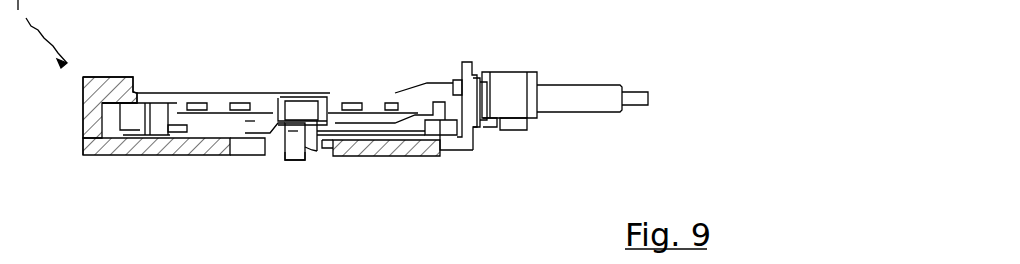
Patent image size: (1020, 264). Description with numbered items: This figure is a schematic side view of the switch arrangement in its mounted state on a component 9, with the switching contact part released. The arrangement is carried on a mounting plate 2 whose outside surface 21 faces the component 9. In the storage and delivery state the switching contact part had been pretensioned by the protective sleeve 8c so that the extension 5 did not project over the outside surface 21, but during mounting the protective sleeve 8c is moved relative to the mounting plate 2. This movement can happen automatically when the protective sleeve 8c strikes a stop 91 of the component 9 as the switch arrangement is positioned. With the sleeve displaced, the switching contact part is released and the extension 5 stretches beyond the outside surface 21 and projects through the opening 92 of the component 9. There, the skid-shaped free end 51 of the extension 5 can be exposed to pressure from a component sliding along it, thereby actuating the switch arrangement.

The component 9 is at (88, 125).
The stop 91 is at (136, 92).
The opening 92 is at (245, 153).
The mounting plate 2 is at (218, 133).
The protective sleeve 8c is at (253, 90).
The extension 5 is at (273, 133).
The skid-shaped free end 51 is at (295, 160).
The outside surface 21 is at (328, 141).